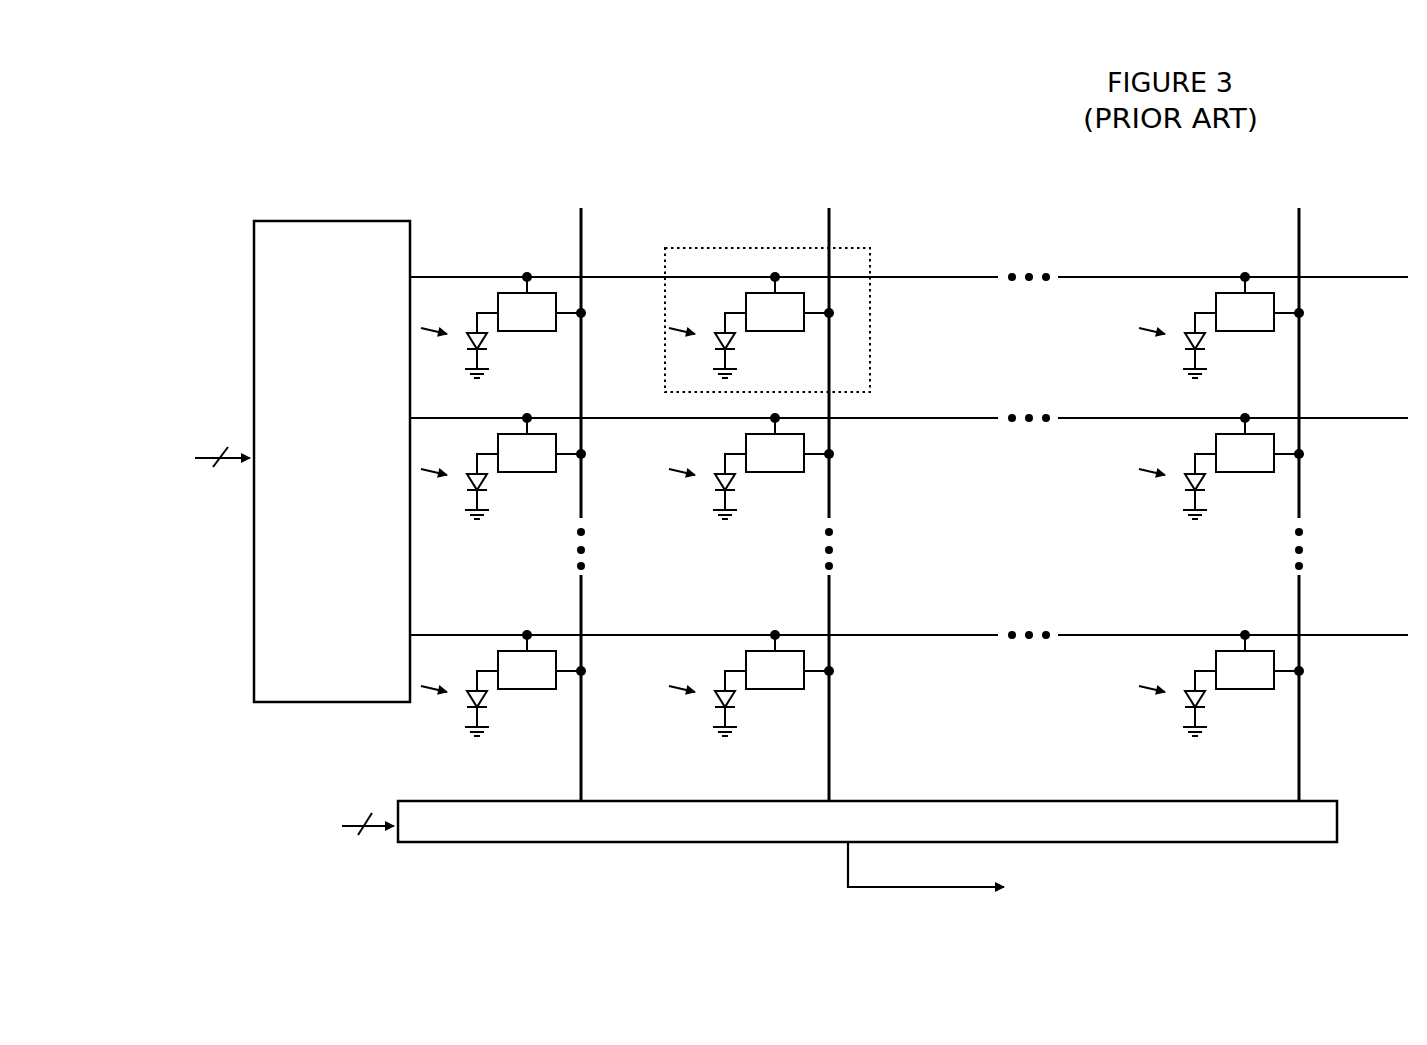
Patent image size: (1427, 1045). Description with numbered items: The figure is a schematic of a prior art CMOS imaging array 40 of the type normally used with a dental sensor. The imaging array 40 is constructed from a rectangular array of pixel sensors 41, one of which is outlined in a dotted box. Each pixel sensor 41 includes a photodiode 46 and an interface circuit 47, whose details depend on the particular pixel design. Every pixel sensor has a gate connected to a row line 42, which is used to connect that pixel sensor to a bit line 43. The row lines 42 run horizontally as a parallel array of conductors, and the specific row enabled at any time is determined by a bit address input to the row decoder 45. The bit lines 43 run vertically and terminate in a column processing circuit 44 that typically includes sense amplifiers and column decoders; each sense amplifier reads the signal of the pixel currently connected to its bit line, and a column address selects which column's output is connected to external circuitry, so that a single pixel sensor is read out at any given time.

The imaging array 40 is at (170, 208).
The pixel sensor 41 is at (730, 248).
The row line 42 is at (923, 277).
The bit line 43 is at (582, 612).
The column processing circuit 44 is at (955, 801).
The row decoder 45 is at (343, 221).
The photodiode 46 is at (485, 338).
The interface circuit 47 is at (515, 298).